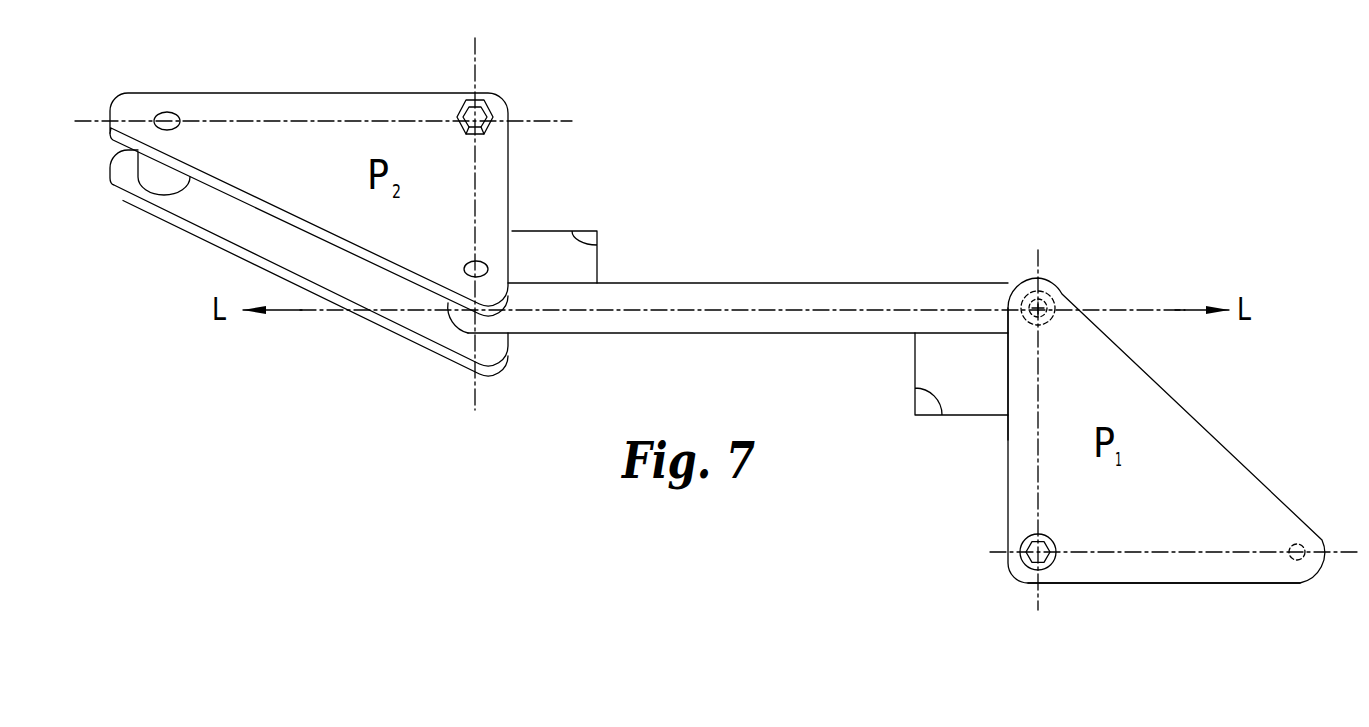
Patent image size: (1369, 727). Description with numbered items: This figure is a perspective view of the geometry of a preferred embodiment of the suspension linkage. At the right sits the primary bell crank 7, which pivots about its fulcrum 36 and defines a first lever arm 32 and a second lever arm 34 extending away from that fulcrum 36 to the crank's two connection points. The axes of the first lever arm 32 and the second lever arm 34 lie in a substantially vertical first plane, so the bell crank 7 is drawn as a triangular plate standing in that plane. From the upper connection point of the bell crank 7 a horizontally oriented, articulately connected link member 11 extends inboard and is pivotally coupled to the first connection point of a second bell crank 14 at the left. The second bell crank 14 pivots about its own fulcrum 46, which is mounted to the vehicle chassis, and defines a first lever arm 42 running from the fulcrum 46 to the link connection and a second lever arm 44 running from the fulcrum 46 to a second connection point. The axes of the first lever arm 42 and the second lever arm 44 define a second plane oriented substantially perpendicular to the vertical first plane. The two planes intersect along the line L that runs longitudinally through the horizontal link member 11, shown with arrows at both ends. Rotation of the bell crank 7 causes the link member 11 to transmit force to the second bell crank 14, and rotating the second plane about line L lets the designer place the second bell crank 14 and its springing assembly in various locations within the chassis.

The bell crank 7 is at (1178, 432).
The horizontal link member 11 is at (722, 296).
The second bell crank 14 is at (333, 135).
The first lever arm 32 is at (1133, 556).
The second lever arm 34 is at (1040, 441).
The fulcrum 36 is at (1025, 556).
The first lever arm 42 is at (475, 192).
The second lever arm 44 is at (398, 120).
The fulcrum 46 is at (488, 110).